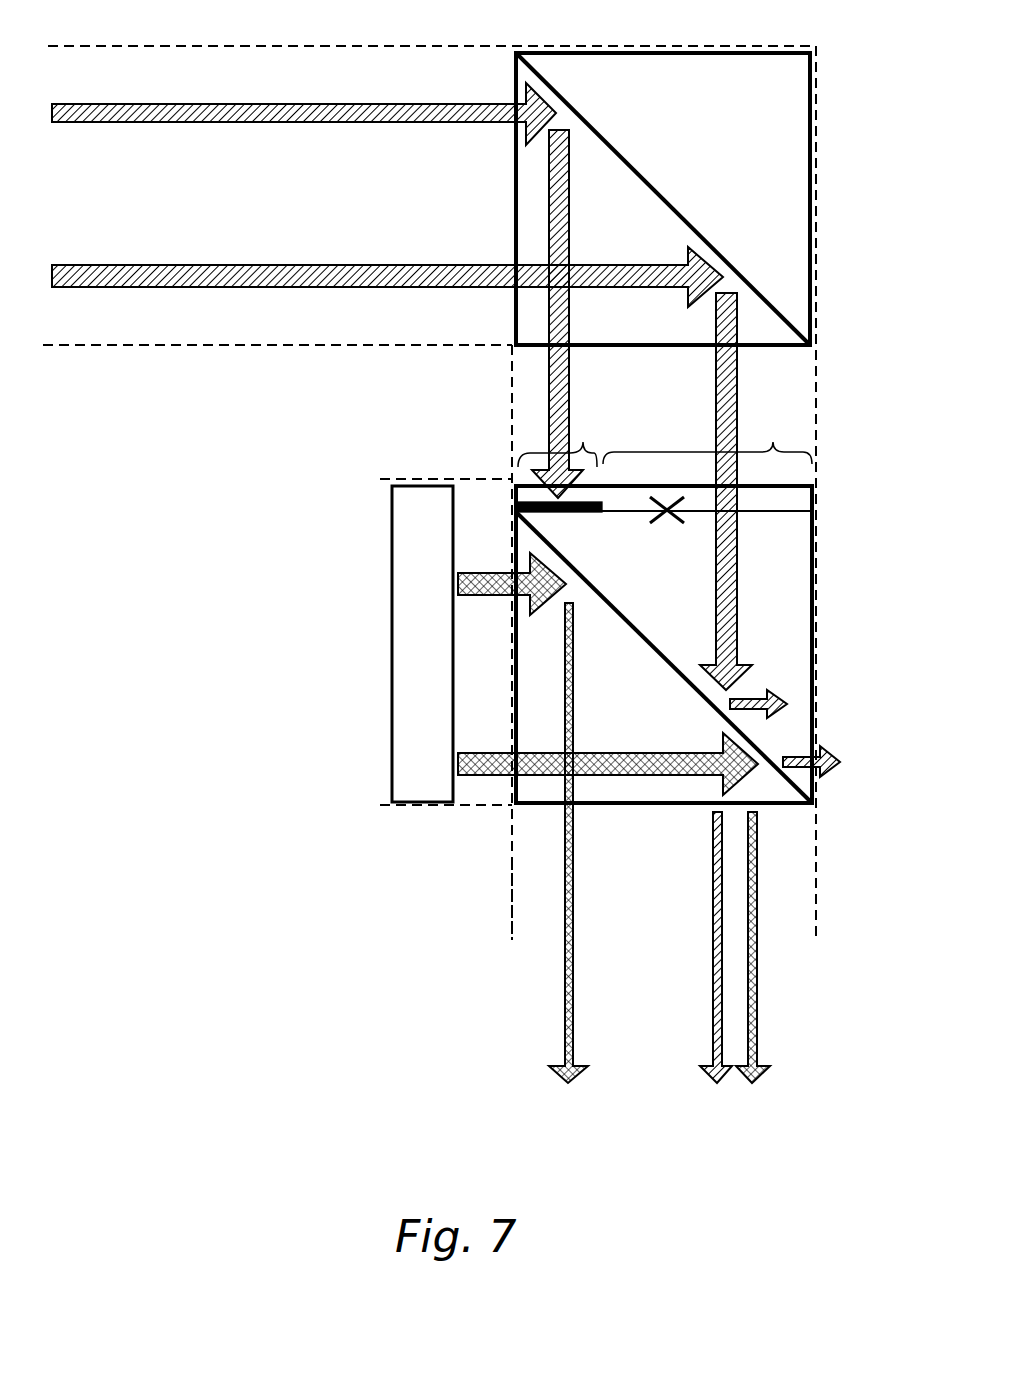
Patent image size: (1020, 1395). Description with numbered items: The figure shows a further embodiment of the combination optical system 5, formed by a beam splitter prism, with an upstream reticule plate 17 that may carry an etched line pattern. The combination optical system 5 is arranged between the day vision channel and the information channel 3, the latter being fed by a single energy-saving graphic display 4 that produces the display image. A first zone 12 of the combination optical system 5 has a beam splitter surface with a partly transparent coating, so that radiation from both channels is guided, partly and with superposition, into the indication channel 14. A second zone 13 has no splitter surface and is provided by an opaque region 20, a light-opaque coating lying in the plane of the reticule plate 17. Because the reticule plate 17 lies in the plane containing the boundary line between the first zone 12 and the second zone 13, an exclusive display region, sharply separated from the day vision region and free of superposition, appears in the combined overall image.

The information channel 3 is at (525, 377).
The graphic display 4 is at (385, 644).
The combination optical system 5 is at (705, 644).
The first zone 12 is at (745, 438).
The second zone 13 is at (580, 438).
The indication channel 14 is at (473, 904).
The reticule plate 17 is at (652, 533).
The opaque region 20 is at (521, 477).